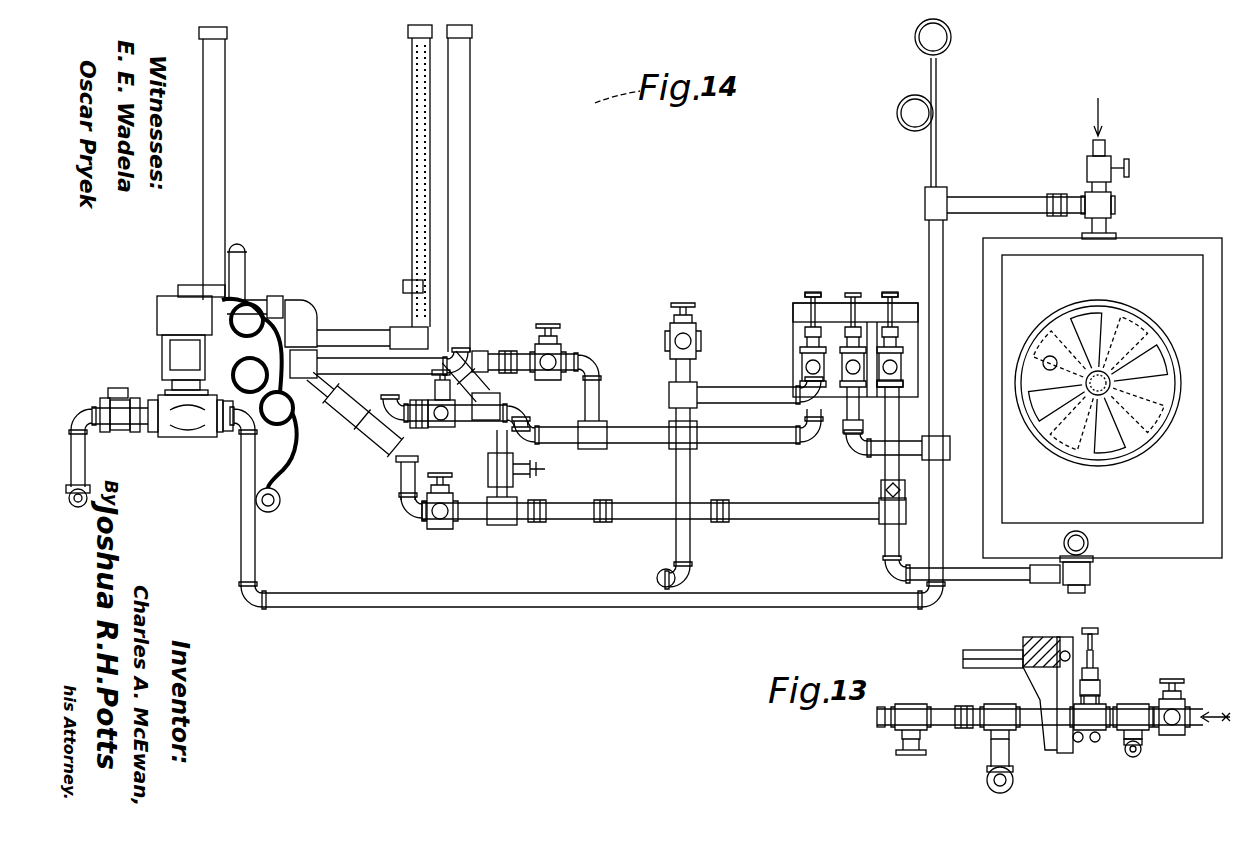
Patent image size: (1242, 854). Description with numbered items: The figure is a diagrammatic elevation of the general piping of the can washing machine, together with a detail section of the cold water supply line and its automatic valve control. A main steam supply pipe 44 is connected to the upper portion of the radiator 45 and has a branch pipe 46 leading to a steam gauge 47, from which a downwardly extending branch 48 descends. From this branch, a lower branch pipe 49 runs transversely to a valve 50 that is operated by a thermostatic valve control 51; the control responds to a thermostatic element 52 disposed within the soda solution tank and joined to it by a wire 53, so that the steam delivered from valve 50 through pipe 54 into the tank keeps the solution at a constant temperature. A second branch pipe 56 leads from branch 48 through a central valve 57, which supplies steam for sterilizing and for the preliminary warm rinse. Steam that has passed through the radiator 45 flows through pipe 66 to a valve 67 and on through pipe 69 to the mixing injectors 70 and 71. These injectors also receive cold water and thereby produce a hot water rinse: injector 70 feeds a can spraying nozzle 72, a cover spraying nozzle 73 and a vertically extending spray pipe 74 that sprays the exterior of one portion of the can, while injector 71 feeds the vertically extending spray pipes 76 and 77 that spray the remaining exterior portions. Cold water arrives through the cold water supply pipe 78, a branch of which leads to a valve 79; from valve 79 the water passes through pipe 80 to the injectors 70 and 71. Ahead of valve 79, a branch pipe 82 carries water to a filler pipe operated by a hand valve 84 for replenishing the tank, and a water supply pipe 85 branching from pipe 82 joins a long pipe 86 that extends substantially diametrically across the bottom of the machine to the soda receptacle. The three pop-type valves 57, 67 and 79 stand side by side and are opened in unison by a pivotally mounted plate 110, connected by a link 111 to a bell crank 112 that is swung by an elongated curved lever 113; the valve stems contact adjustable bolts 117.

In FIG. 14, the main steam supply pipe 44 is at (1112, 142).
In FIG. 14, the radiator 45 is at (1192, 240).
In FIG. 14, the branch pipe 46 is at (972, 196).
In FIG. 14, the steam gauge 47 is at (952, 40).
In FIG. 14, the downwardly extending branch 48 is at (944, 362).
In FIG. 14, the lower branch pipe 49 is at (545, 607).
In FIG. 14, the valve 50 is at (186, 438).
In FIG. 14, the thermostatic valve control 51 is at (157, 300).
In FIG. 14, the thermostatic element 52 is at (281, 506).
In FIG. 14, the wire 53 is at (283, 442).
In FIG. 14, the pipe 54 is at (88, 455).
In FIG. 14, the second branch pipe 56 is at (905, 440).
In FIG. 14, the central valve 57 is at (845, 400).
In FIG. 14, the pipe 66 is at (975, 581).
In FIG. 14, the valve 67 is at (900, 360).
In FIG. 14, the pipe 69 is at (778, 516).
In FIG. 14, the mixing injector 70 is at (495, 382).
In FIG. 14, the mixing injector 71 is at (370, 450).
In FIG. 14, the can spraying nozzle 72 is at (402, 284).
In FIG. 14, the cover spraying nozzle 73 is at (246, 258).
In FIG. 14, the vertically extending spray pipe 74 is at (411, 203).
In FIG. 14, the vertically extending spray pipe 76 is at (226, 193).
In FIG. 14, the vertically extending spray pipe 77 is at (471, 158).
In FIG. 13, the cold water supply pipe 78 is at (1186, 702).
In FIG. 13, the valve 79 is at (1094, 743).
In FIG. 14, the pipe 80 is at (470, 422).
In FIG. 13, the pipe 80 is at (1013, 781).
In FIG. 14, the branch pipe 82 is at (748, 388).
In FIG. 14, the hand valve 84 is at (675, 303).
In FIG. 14, the water supply pipe 85 is at (692, 470).
In FIG. 14, the long pipe 86 is at (656, 578).
In FIG. 14, the pivotally mounted plate 110 is at (873, 305).
In FIG. 13, the pivotally mounted plate 110 is at (1099, 668).
In FIG. 14, the link 111 is at (905, 383).
In FIG. 13, the link 111 is at (1101, 690).
In FIG. 14, the bell crank 112 is at (878, 372).
In FIG. 13, the bell crank 112 is at (1030, 686).
In FIG. 13, the elongated curved lever 113 is at (985, 652).
In FIG. 14, the adjustable bolts 117 is at (822, 287).
In FIG. 13, the adjustable bolts 117 is at (1098, 632).